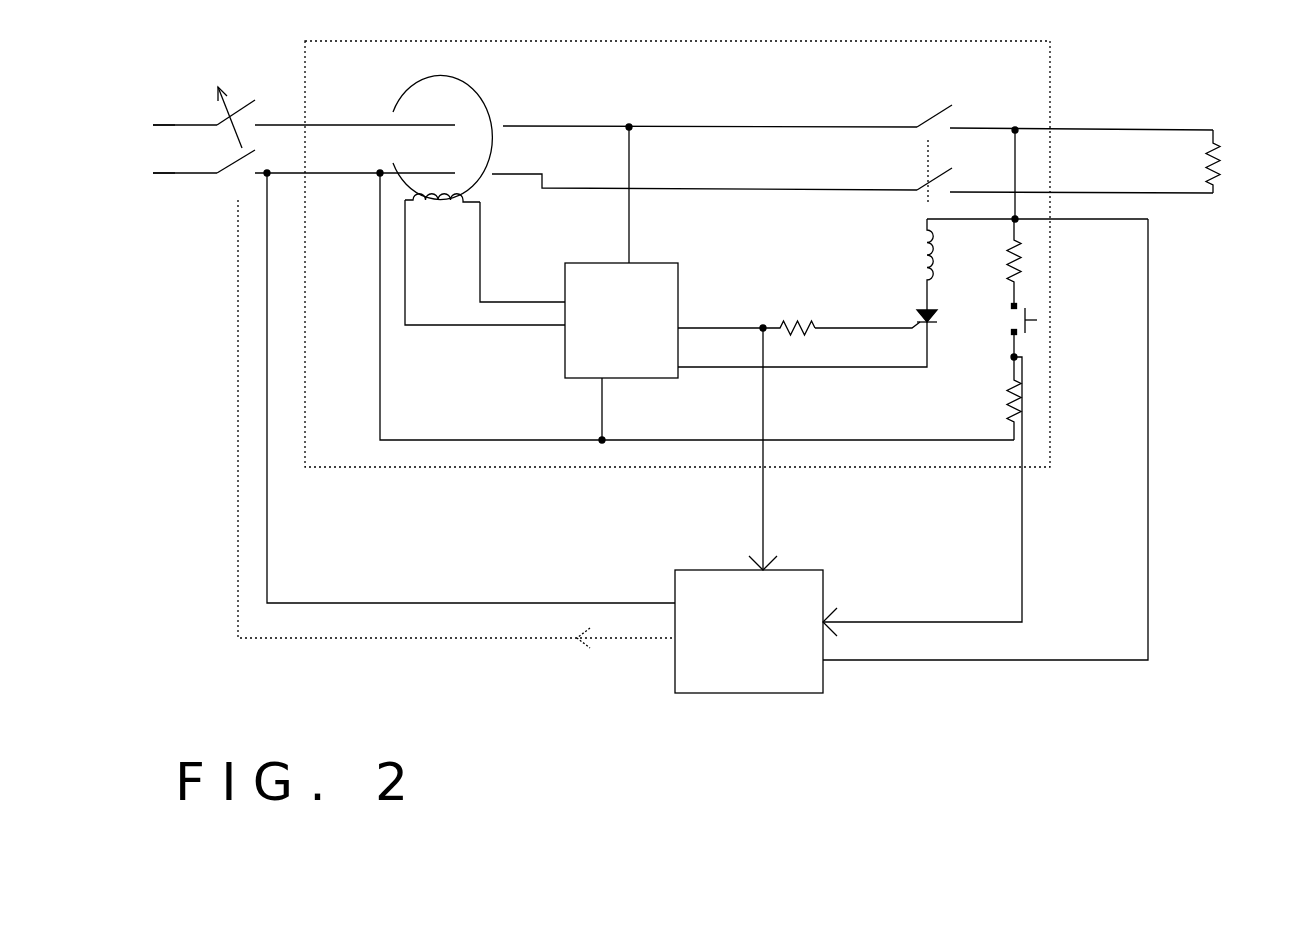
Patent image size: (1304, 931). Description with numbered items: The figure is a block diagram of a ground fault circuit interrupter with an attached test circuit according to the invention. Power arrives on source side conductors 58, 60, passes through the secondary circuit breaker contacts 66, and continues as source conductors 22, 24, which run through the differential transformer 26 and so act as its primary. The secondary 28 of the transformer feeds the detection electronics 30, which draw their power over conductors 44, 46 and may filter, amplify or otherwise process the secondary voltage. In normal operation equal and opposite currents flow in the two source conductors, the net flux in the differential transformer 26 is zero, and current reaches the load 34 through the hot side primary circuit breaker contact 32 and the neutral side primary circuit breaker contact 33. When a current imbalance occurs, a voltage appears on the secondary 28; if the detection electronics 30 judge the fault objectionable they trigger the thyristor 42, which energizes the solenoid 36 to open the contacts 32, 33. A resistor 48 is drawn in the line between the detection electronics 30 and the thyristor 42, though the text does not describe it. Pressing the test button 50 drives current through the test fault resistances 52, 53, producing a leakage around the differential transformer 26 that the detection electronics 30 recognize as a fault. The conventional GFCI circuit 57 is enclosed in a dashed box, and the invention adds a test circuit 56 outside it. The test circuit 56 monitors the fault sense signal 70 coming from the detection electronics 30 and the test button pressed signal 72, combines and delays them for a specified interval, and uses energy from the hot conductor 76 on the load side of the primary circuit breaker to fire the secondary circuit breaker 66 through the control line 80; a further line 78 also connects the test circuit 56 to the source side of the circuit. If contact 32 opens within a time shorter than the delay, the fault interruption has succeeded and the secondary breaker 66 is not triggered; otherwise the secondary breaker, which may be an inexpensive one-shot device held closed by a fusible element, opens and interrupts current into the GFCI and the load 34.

The source conductor 22 is at (368, 113).
The source conductor 24 is at (367, 177).
The differential transformer 26 is at (480, 88).
The secondary 28 is at (442, 212).
The detection electronics 30 is at (665, 392).
The hot side primary circuit breaker contact 32 is at (915, 143).
The neutral side primary circuit breaker contact 33 is at (915, 181).
The load 34 is at (1225, 133).
The solenoid 36 is at (927, 267).
The thyristor 42 is at (938, 318).
The conductor delivering power to detection electronics 44 is at (632, 227).
The conductor delivering power to detection electronics 46 is at (603, 390).
The resistor 48 is at (793, 312).
The test button 50 is at (1025, 343).
The test fault resistance 52 is at (1002, 270).
The test fault resistance 53 is at (998, 407).
The test circuit 56 is at (835, 683).
The GFCI circuit 57 is at (365, 478).
The source side conductor 58 is at (180, 137).
The source side conductor 60 is at (167, 187).
The secondary circuit breaker contacts 66 is at (224, 116).
The fault sense signal 70 is at (750, 493).
The test button pressed signal 72 is at (1035, 548).
The hot conductor on load side of primary circuit breaker 76 is at (1160, 548).
The line to test circuit 78 is at (538, 592).
The control for secondary breaker 80 is at (703, 315).